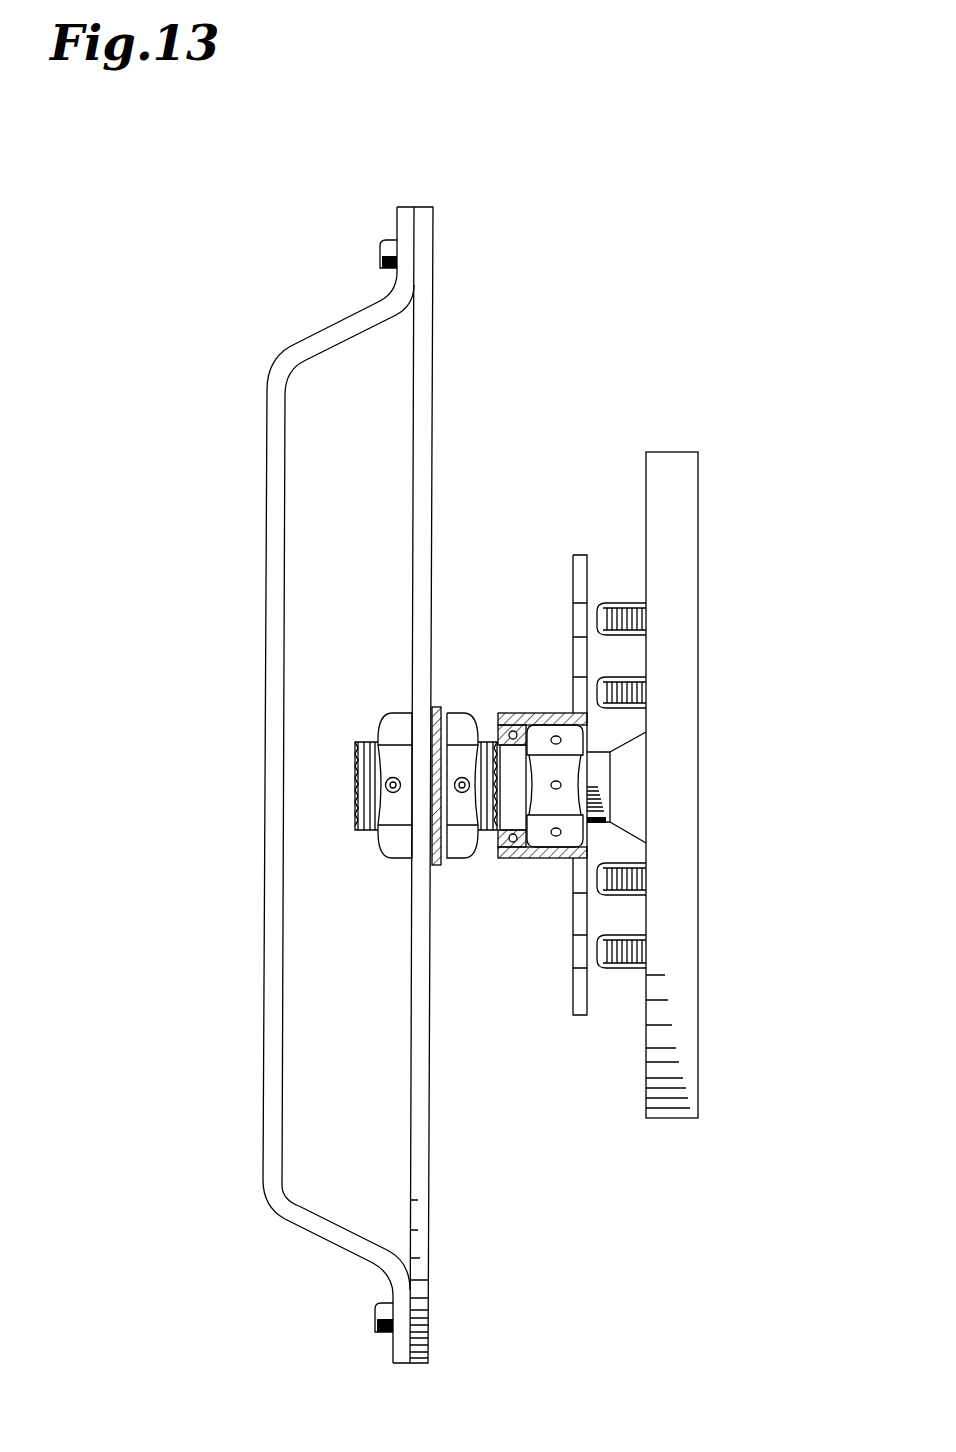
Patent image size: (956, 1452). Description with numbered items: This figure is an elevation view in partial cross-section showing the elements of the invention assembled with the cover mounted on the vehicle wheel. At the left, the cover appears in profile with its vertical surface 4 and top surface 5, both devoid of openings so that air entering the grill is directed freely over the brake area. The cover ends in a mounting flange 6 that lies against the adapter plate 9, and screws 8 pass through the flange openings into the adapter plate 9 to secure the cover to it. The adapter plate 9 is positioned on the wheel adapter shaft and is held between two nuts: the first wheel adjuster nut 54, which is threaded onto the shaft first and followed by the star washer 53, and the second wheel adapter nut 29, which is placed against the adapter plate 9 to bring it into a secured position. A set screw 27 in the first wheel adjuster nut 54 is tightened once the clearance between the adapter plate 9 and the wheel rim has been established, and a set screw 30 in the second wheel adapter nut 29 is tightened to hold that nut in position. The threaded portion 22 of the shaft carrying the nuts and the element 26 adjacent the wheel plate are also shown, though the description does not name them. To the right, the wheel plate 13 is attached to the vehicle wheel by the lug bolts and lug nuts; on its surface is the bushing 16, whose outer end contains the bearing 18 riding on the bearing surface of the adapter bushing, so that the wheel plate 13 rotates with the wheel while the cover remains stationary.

The vertical surface 4 is at (327, 333).
The top surface 5 is at (267, 460).
The mounting flange 6 is at (397, 218).
The screws 8 is at (393, 263).
The adapter plate 9 is at (433, 335).
The wheel plate 13 is at (562, 625).
The bushing 16 is at (540, 862).
The bearing 18 is at (517, 862).
The threaded portion 22 is at (358, 740).
The hex nut 26 is at (598, 784).
The set screw 27 is at (462, 778).
The second wheel adapter nut 29 is at (392, 842).
The set screw 30 is at (393, 778).
The star washer 53 is at (437, 862).
The first wheel adjuster nut 54 is at (463, 842).